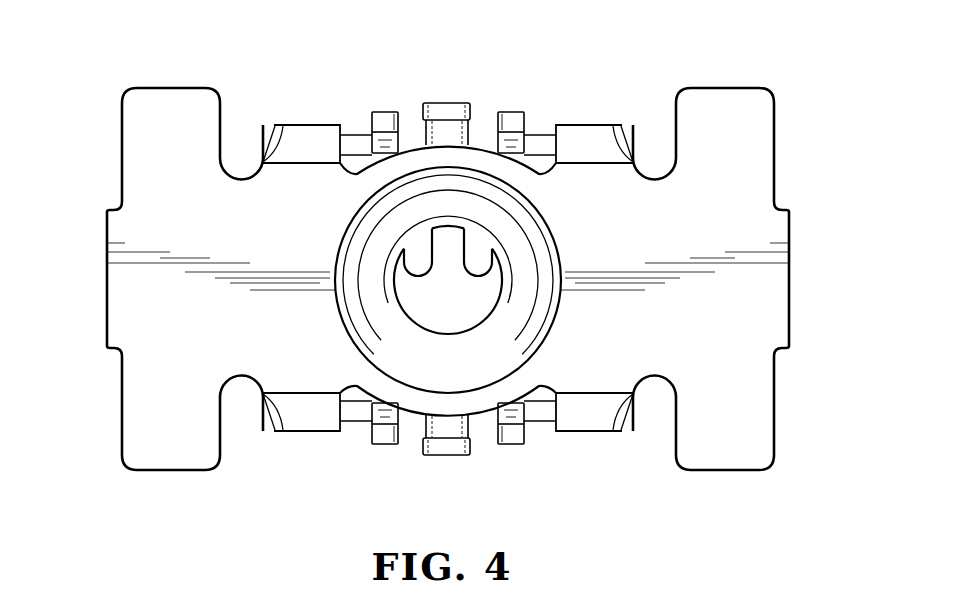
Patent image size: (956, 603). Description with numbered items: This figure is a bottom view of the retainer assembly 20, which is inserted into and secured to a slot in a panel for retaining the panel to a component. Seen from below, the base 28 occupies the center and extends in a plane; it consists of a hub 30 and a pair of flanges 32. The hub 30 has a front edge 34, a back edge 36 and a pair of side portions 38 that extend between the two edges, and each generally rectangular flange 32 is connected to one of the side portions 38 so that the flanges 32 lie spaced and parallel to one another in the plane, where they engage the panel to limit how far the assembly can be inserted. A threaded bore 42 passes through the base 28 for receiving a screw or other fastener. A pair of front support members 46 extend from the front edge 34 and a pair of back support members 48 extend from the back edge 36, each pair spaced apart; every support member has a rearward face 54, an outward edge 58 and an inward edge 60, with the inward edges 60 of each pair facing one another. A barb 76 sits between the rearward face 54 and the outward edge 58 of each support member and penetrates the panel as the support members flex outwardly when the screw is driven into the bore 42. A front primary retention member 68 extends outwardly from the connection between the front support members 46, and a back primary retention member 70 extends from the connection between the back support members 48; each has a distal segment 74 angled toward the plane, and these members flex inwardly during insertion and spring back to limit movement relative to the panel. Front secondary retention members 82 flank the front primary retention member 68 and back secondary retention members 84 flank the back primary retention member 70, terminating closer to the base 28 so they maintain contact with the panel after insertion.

The retainer assembly 20 is at (782, 71).
The base 28 is at (480, 148).
The hub 30 is at (401, 150).
The flanges 32 is at (121, 318).
The front edge 34 is at (443, 144).
The back edge 36 is at (413, 413).
The side portions 38 is at (247, 302).
The bore 42 is at (492, 313).
The front support members 46 is at (328, 125).
The back support members 48 is at (328, 431).
The rearward face 54 is at (306, 125).
The outward edge 58 is at (263, 143).
The inward edge 60 is at (343, 146).
The front primary retention member 68 is at (461, 104).
The back primary retention member 70 is at (430, 456).
The distal segment 74 is at (443, 119).
The barb 76 is at (273, 122).
The front secondary retention members 82 is at (381, 112).
The back secondary retention members 84 is at (379, 445).